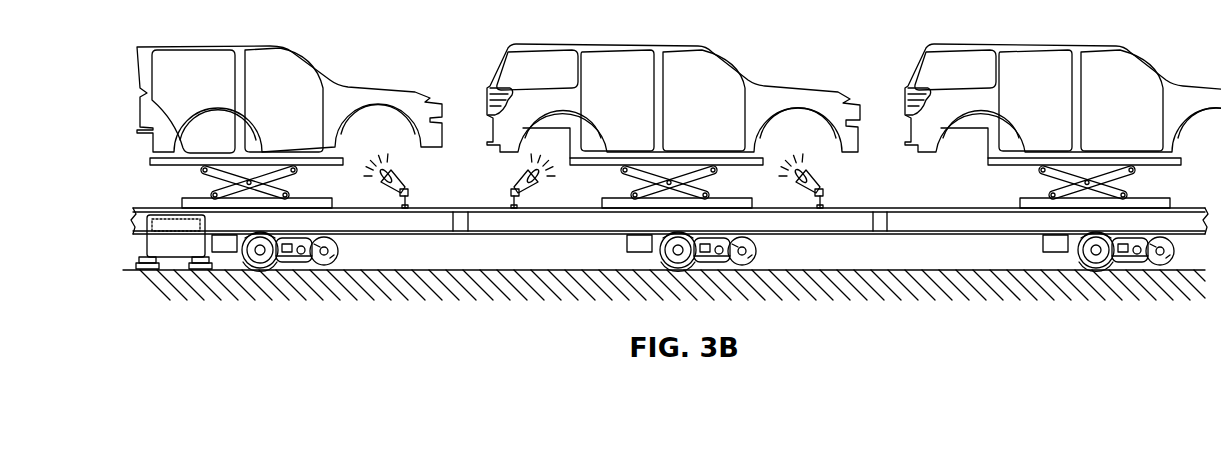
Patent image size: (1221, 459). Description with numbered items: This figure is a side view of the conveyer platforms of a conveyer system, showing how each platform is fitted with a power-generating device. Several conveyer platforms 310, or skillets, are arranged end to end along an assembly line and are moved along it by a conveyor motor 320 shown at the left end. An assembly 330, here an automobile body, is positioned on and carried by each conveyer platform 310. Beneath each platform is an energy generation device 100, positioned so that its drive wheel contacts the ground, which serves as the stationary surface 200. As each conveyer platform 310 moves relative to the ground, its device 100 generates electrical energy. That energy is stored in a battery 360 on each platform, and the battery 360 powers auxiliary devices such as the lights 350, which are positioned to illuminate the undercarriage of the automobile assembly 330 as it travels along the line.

The energy generation device 100 is at (345, 252).
The stationary surface 200 is at (882, 268).
The conveyer platform 310 is at (497, 218).
The conveyor motor 320 is at (177, 252).
The assembly 330 is at (355, 84).
The lights 350 is at (507, 190).
The battery 360 is at (230, 253).